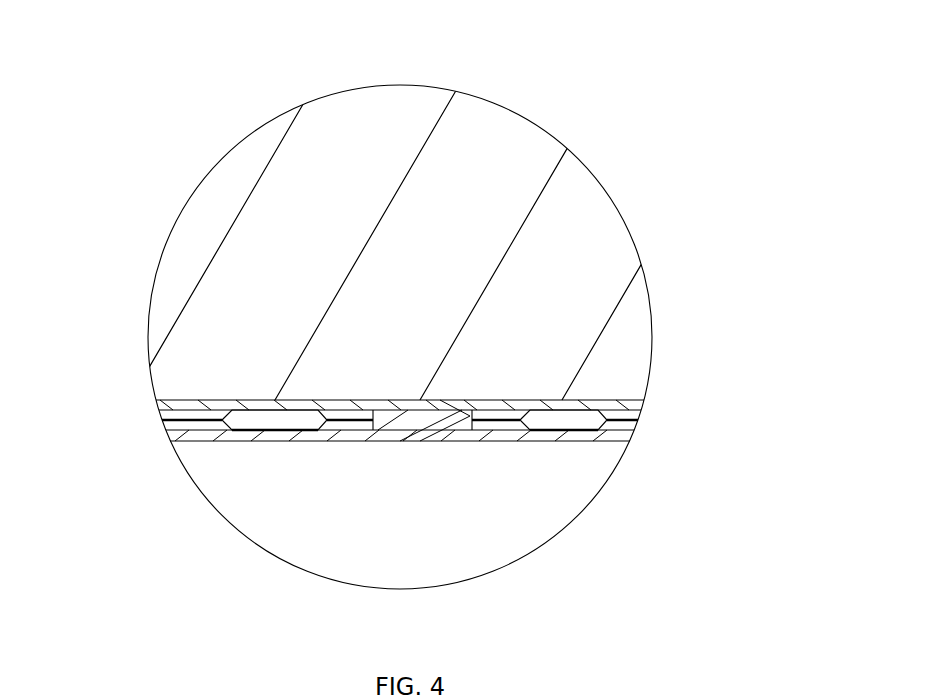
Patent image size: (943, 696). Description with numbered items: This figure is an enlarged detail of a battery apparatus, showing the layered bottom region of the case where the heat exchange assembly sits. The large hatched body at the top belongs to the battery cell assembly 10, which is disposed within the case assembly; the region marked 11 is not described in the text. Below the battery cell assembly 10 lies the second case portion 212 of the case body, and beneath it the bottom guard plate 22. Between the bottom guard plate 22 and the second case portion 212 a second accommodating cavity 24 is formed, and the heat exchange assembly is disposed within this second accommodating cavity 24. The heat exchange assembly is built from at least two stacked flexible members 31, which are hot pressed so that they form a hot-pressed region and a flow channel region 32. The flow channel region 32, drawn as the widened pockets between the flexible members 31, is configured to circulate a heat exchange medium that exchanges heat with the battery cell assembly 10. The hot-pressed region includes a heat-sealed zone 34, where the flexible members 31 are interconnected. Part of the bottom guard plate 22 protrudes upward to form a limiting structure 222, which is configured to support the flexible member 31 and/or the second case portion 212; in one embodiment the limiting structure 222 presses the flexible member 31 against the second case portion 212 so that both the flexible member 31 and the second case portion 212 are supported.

The battery cell assembly 10 is at (663, 244).
The substrate 11 is at (505, 135).
The second case portion 212 is at (603, 400).
The bottom guard plate 22 is at (540, 428).
The limiting structure 222 is at (440, 418).
The second accommodating cavity 24 is at (157, 448).
The flexible member 31 is at (253, 405).
The flow channel region 32 is at (293, 470).
The heat-sealed zone 34 is at (353, 470).